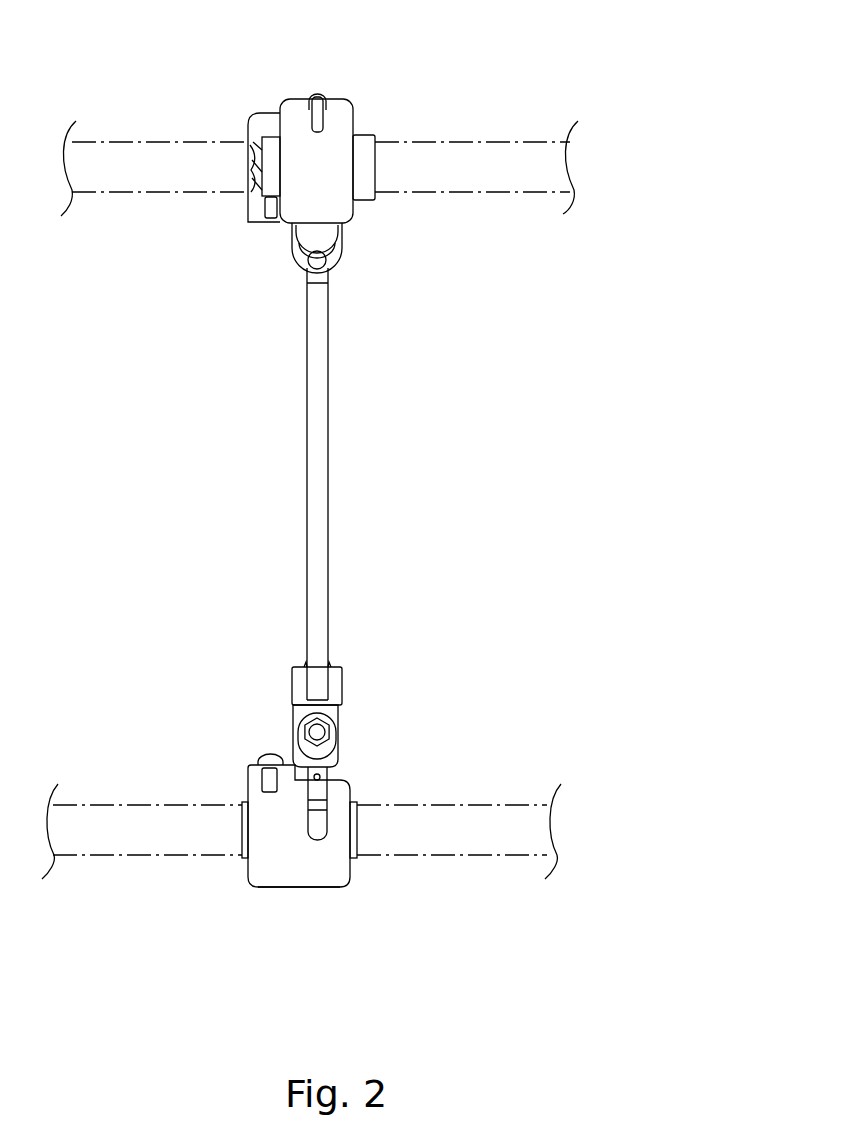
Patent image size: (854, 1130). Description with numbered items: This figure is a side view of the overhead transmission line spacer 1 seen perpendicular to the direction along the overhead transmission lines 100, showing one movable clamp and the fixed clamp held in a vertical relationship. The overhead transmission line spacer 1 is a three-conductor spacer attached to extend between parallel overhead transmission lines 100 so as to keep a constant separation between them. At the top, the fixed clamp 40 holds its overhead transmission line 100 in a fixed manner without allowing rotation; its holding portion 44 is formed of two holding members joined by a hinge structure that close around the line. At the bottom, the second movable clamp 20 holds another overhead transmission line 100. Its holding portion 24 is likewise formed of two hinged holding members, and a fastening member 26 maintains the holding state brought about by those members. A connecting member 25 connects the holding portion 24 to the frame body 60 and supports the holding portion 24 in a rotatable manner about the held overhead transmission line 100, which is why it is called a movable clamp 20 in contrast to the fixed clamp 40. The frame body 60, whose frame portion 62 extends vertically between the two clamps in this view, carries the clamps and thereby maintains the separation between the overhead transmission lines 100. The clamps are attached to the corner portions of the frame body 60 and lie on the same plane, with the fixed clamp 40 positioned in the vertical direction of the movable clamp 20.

The overhead transmission line spacer 1 is at (467, 65).
The movable clamp 20 is at (267, 888).
The holding portion 24 is at (330, 887).
The connecting member 25 is at (339, 755).
The fastening member 26 is at (272, 765).
The fixed clamp 40 is at (355, 98).
The holding portion 44 is at (355, 216).
The frame body 60 is at (327, 425).
The frame portion 62 is at (327, 392).
The overhead transmission line 100 is at (493, 193).